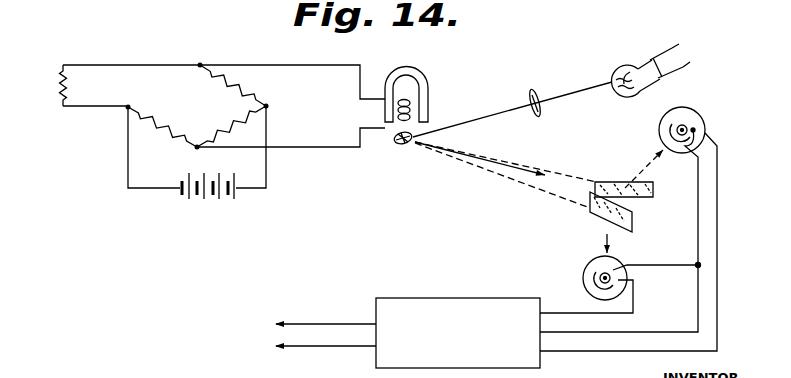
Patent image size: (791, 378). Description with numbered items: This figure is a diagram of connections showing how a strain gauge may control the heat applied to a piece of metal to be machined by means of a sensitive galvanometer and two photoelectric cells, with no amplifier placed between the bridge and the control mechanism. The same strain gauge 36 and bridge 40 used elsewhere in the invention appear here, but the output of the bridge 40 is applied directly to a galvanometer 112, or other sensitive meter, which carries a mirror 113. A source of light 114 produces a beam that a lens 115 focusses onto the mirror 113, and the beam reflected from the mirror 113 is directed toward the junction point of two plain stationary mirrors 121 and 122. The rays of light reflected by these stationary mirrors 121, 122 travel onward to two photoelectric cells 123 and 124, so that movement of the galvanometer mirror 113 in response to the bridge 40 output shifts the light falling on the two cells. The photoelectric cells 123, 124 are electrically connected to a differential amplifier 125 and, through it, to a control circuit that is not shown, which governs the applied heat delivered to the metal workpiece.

The strain gauge 36 is at (60, 85).
The bridge 40 is at (220, 52).
The galvanometer 112 is at (436, 98).
The mirror 113 is at (396, 143).
The source of light 114 is at (633, 62).
The lens 115 is at (538, 98).
The plain stationary mirror 121 is at (633, 226).
The plain stationary mirror 122 is at (653, 192).
The photoelectric cell 123 is at (583, 271).
The photoelectric cell 124 is at (705, 120).
The differential amplifier 125 is at (417, 298).